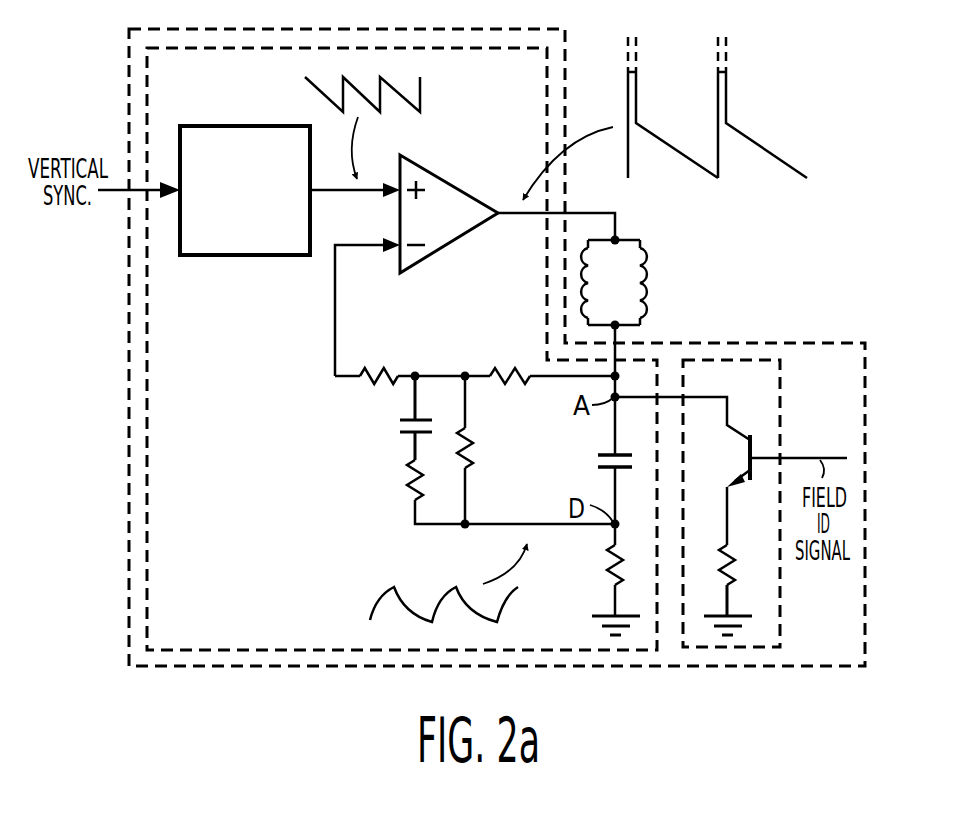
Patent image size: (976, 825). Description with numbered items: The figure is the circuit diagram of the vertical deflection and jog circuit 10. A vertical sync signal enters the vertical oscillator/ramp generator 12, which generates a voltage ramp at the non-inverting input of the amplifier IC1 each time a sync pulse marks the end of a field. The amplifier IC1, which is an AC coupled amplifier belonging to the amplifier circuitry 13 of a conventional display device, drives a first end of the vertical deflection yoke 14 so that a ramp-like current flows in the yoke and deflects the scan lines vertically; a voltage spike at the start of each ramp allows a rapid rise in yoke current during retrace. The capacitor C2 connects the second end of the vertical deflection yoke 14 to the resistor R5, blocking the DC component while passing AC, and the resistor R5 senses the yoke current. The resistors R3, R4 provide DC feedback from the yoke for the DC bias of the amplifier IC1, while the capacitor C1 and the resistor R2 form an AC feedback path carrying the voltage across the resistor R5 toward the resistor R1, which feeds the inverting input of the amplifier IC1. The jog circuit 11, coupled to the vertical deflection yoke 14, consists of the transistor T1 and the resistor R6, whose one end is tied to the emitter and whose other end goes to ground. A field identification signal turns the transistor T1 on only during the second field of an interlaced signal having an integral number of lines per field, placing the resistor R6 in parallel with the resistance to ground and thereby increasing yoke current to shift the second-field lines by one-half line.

The vertical deflection and jog circuit 10 is at (126, 513).
The jog circuit 11 is at (785, 601).
The vertical oscillator/ramp generator 12 is at (234, 258).
The amplifier circuitry 13 is at (146, 399).
The vertical deflection yoke 14 is at (651, 270).
The amplifier IC1 is at (458, 180).
The resistor R1 is at (375, 361).
The resistor R2 is at (419, 492).
The resistor R3 is at (536, 452).
The resistor R4 is at (540, 361).
The resistor R5 is at (600, 565).
The resistor R6 is at (736, 590).
The capacitor C1 is at (401, 418).
The capacitor C2 is at (598, 466).
The transistor T1 is at (731, 471).